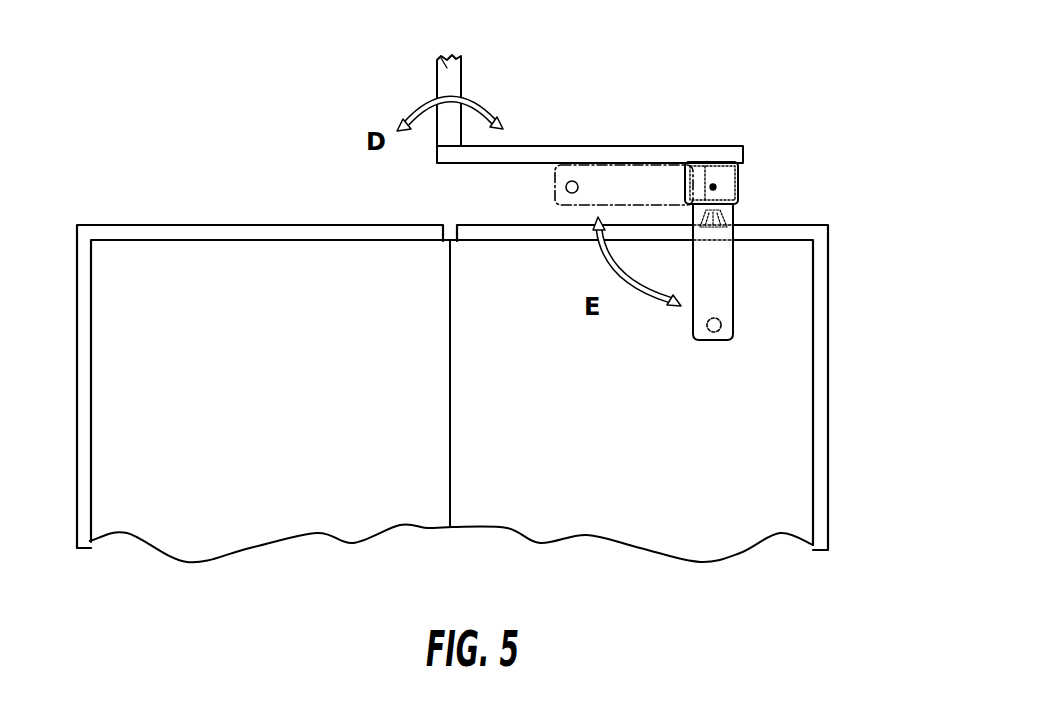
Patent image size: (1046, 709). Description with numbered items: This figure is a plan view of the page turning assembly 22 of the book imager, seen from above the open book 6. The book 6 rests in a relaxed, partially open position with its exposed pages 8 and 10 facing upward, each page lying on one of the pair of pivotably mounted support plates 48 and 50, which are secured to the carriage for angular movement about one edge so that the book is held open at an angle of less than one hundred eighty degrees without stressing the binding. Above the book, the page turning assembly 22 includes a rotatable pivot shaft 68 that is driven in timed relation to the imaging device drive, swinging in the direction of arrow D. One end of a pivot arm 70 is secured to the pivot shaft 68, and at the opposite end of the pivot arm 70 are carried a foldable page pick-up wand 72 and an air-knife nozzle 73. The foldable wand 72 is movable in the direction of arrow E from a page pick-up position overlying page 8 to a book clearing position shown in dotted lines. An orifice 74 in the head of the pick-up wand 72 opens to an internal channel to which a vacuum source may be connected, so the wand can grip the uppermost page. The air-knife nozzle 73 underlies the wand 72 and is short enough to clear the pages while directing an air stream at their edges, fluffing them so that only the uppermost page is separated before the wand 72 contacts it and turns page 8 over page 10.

The book 6 is at (322, 264).
The page 8 is at (698, 518).
The page 10 is at (217, 530).
The page turning assembly 22 is at (598, 208).
The support plate 48 is at (818, 272).
The support plate 50 is at (112, 230).
The pivot shaft 68 is at (447, 70).
The pivot arm 70 is at (623, 150).
The foldable page pick-up wand 72 is at (717, 270).
The air-knife nozzle 73 is at (717, 190).
The orifice 74 is at (712, 340).